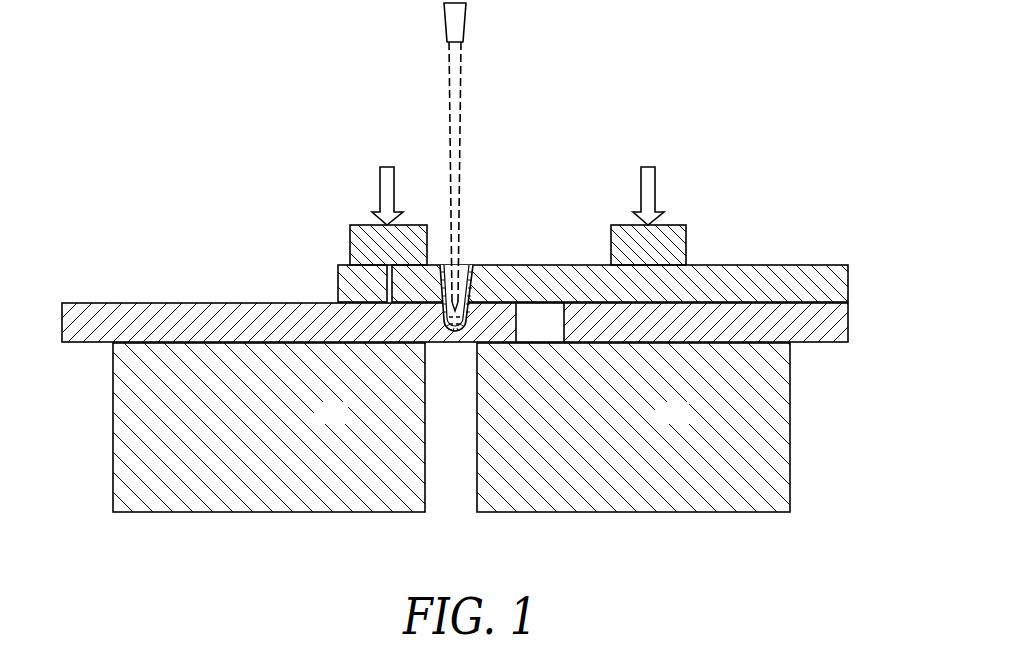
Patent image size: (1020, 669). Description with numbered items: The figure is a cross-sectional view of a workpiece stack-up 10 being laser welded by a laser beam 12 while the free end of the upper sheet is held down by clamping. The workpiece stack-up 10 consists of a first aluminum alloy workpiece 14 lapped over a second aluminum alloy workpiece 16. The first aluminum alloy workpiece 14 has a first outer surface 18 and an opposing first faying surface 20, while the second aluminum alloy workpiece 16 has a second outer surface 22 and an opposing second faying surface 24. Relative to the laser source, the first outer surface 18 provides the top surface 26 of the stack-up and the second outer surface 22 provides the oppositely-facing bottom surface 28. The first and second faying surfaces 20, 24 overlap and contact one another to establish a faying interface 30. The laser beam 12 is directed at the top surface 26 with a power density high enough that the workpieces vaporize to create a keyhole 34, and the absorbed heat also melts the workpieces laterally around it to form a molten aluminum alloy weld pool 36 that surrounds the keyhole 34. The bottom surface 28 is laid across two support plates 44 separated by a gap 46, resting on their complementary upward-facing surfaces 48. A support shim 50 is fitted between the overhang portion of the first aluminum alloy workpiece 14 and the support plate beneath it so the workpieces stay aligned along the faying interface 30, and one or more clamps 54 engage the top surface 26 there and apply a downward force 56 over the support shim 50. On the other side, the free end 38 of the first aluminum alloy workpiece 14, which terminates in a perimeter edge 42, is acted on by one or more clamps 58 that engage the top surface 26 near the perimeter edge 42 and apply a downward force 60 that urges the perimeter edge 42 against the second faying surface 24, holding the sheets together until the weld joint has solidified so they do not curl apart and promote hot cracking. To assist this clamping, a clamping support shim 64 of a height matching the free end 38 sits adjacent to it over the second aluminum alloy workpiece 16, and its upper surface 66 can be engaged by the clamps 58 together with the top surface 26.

The workpiece stack-up 10 is at (521, 254).
The laser beam 12 is at (461, 80).
The first aluminum alloy workpiece 14 is at (765, 264).
The second aluminum alloy workpiece 16 is at (112, 320).
The first outer surface 18 is at (540, 264).
The first faying surface 20 is at (500, 302).
The second outer surface 22 is at (345, 352).
The second faying surface 24 is at (398, 301).
The top surface 26 is at (480, 264).
The bottom surface 28 is at (443, 340).
The faying interface 30 is at (483, 305).
The keyhole 34 is at (463, 264).
The molten aluminum alloy weld pool 36 is at (486, 318).
The free end 38 is at (414, 258).
The perimeter edge 42 is at (347, 264).
The support plates 44 is at (345, 425).
The gap 46 is at (466, 504).
The upward-facing surfaces 48 is at (150, 343).
The support shim 50 is at (850, 320).
The clamps 54 is at (672, 226).
The downward force 56 is at (648, 167).
The clamps 58 is at (363, 226).
The downward force 60 is at (387, 167).
The clamping support shim 64 is at (350, 285).
The upper surface 66 is at (358, 264).